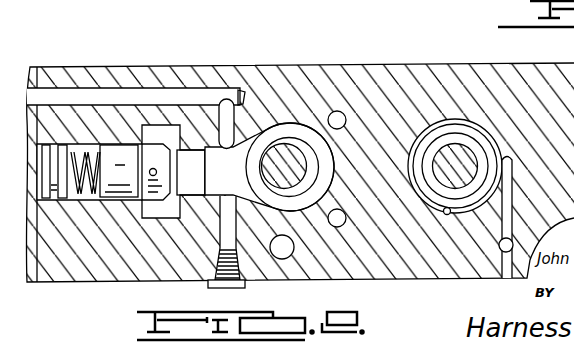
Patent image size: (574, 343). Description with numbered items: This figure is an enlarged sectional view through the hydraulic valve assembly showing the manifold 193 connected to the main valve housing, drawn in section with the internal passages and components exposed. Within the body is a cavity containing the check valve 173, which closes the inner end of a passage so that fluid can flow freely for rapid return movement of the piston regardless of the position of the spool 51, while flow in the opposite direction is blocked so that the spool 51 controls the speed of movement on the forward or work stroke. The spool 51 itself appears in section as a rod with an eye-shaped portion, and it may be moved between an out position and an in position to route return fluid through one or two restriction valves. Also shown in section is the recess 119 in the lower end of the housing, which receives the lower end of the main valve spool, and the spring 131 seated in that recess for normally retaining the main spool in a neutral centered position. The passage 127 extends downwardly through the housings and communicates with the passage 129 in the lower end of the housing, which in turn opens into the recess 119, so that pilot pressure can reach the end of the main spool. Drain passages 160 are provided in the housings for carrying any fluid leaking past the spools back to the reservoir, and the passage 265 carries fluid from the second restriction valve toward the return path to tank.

The spool 51 is at (289, 148).
The recess 119 is at (444, 213).
The passage 127 is at (499, 246).
The passage 129 is at (513, 196).
The spring 131 is at (498, 133).
The drain passage 160 is at (294, 248).
The check valve 173 is at (120, 141).
The manifold 193 is at (31, 66).
The passage 265 is at (175, 84).